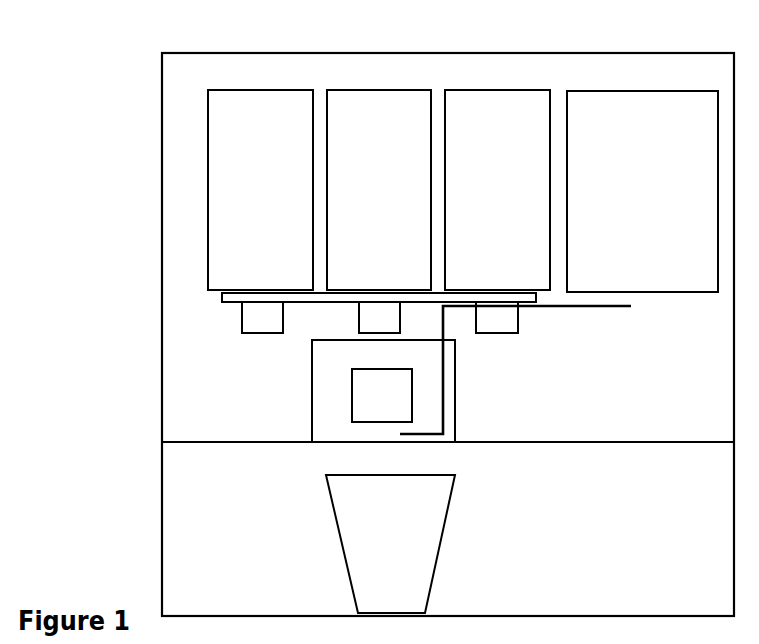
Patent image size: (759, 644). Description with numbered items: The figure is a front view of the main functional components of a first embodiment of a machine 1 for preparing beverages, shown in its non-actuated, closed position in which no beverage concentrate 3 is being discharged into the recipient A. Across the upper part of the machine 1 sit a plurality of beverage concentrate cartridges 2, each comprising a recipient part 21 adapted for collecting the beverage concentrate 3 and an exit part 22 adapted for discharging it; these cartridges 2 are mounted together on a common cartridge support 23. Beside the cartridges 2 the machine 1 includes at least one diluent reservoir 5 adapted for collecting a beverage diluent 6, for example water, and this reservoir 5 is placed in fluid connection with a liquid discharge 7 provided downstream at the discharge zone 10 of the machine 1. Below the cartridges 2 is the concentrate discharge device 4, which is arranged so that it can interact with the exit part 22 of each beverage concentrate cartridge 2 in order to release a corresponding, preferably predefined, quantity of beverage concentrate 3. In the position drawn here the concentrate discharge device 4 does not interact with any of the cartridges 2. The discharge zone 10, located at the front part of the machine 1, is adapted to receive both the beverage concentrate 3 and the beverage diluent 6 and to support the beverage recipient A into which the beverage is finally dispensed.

The machine for preparing beverages 1 is at (433, 318).
The beverage concentrate cartridges 2 is at (379, 178).
The beverage concentrate 3 is at (260, 190).
The concentrate discharge device 4 is at (383, 391).
The diluent reservoir 5 is at (642, 179).
The beverage diluent 6 is at (642, 191).
The liquid discharge 7 is at (393, 402).
The discharge zone 10 is at (515, 370).
The recipient part 21 is at (347, 234).
The exit part 22 is at (252, 337).
The common cartridge support 23 is at (402, 318).
The beverage recipient A is at (390, 544).